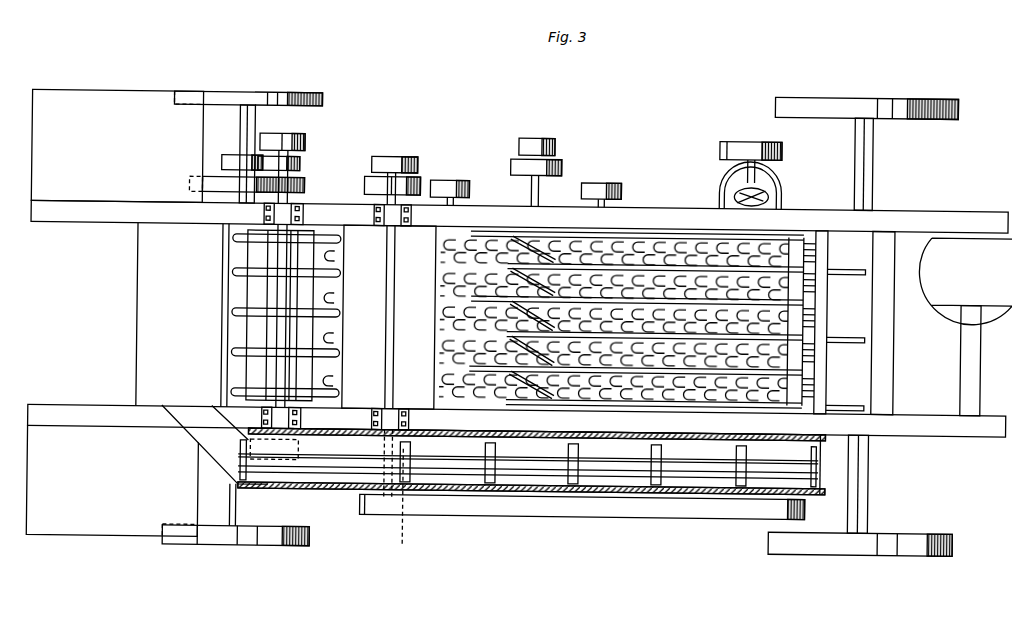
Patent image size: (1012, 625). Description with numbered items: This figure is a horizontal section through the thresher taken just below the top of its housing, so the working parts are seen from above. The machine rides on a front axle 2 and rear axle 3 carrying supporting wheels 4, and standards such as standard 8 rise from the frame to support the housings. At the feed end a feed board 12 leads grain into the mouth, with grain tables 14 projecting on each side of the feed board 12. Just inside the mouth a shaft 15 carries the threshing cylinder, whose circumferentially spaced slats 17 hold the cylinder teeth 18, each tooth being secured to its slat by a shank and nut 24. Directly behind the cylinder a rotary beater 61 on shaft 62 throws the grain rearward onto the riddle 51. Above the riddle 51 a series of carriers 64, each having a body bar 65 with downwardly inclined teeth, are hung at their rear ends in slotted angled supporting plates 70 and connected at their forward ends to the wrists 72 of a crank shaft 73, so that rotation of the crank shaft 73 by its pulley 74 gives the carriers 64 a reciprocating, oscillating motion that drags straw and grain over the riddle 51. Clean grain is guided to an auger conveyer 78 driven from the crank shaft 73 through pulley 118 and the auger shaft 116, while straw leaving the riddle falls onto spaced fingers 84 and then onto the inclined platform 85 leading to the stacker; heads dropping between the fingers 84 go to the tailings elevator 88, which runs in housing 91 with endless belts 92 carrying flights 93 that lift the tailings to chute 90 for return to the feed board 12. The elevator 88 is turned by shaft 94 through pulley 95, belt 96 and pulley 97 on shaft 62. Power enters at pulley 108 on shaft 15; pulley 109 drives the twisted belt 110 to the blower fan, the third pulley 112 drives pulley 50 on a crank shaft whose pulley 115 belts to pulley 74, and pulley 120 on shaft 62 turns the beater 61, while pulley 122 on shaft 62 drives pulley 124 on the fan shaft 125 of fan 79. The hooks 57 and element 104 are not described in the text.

The front axle 2 is at (232, 506).
The rear axle 3 is at (872, 170).
The supporting wheels 4 is at (244, 92).
The standard 8 is at (950, 369).
The feed board 12 is at (182, 315).
The grain tables 14 is at (105, 95).
The shaft 15 is at (300, 156).
The slats 17 is at (310, 346).
The cylinder teeth 18 is at (242, 279).
The nut 24 is at (606, 192).
The pulley 50 is at (215, 182).
The riddle 51 is at (640, 250).
The hook 57 is at (604, 256).
The rotary beater 61 is at (363, 256).
The shaft 62 is at (366, 186).
The carriers 64 is at (692, 380).
The body bars 65 is at (728, 403).
The angled supporting plates 70 is at (828, 363).
The wrists 72 is at (556, 322).
The crank shaft 73 is at (530, 191).
The pulley 74 is at (561, 168).
The auger conveyer 78 is at (768, 192).
The fan 79 is at (528, 308).
The fingers 84 is at (815, 258).
The inclined platform 85 is at (862, 319).
The tailings elevator 88 is at (697, 475).
The chute 90 is at (205, 432).
The housing 91 is at (497, 498).
The endless belts 92 is at (552, 476).
The flights 93 is at (576, 485).
The shaft 94 is at (827, 499).
The pulley 95 is at (766, 528).
The belt 96 is at (725, 518).
The pulley 97 is at (396, 508).
The shaft 104 is at (471, 180).
The pulley 108 is at (330, 361).
The pulley 109 is at (280, 136).
The twisted belt 110 is at (300, 166).
The third pulley 112 is at (262, 208).
The pulley 115 is at (233, 160).
The auger shaft 116 is at (735, 164).
The pulley 118 is at (532, 139).
The pulley 120 is at (396, 158).
The pulley 122 is at (421, 181).
The pulley 124 is at (604, 182).
The fan shaft 125 is at (587, 204).